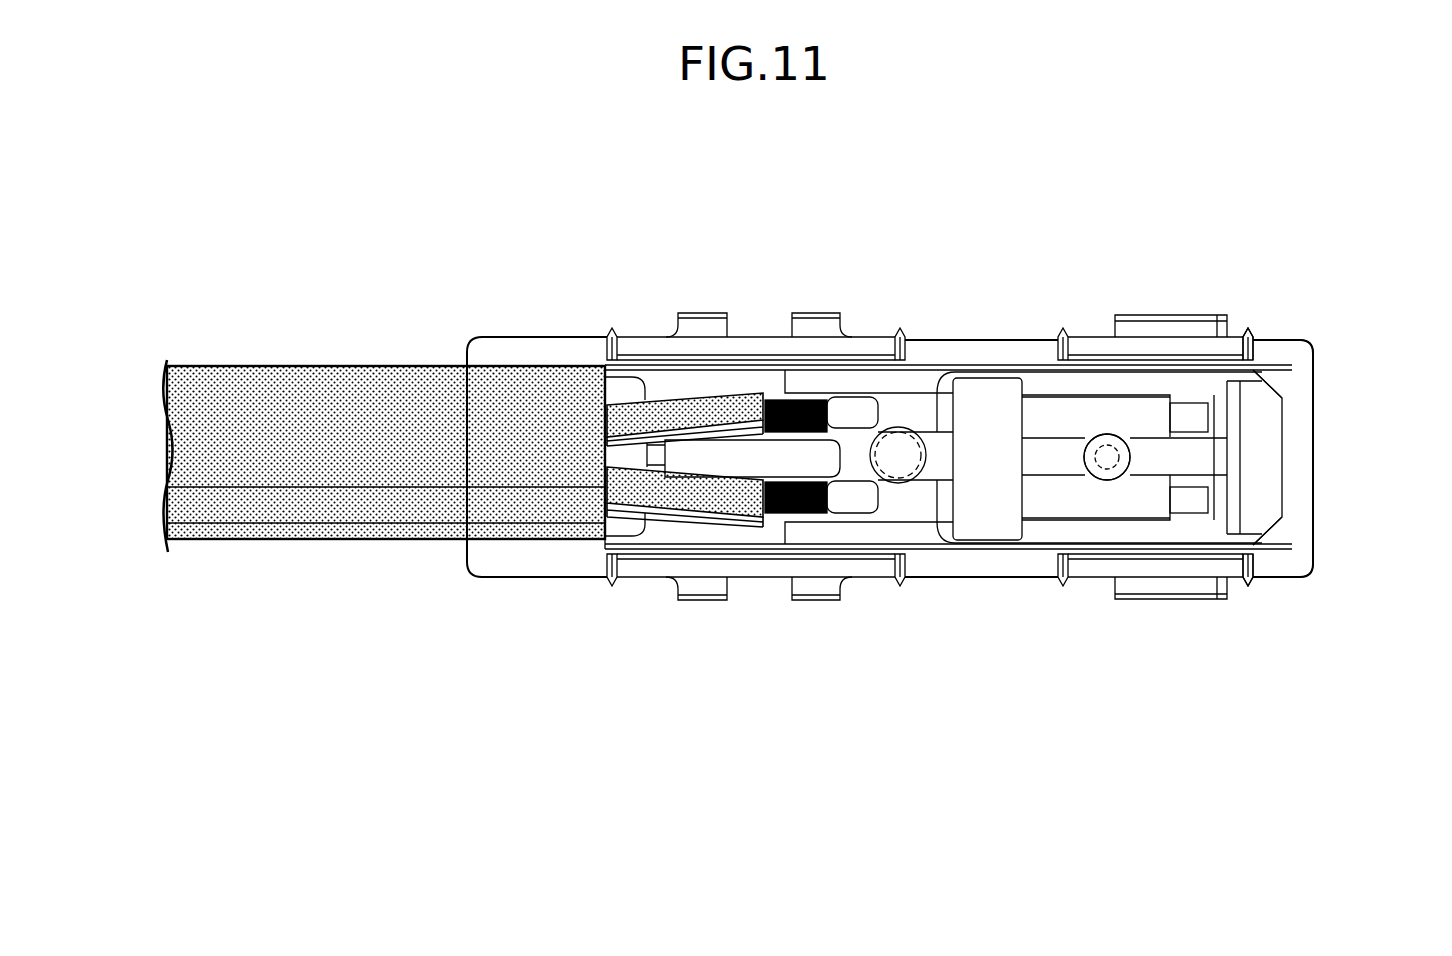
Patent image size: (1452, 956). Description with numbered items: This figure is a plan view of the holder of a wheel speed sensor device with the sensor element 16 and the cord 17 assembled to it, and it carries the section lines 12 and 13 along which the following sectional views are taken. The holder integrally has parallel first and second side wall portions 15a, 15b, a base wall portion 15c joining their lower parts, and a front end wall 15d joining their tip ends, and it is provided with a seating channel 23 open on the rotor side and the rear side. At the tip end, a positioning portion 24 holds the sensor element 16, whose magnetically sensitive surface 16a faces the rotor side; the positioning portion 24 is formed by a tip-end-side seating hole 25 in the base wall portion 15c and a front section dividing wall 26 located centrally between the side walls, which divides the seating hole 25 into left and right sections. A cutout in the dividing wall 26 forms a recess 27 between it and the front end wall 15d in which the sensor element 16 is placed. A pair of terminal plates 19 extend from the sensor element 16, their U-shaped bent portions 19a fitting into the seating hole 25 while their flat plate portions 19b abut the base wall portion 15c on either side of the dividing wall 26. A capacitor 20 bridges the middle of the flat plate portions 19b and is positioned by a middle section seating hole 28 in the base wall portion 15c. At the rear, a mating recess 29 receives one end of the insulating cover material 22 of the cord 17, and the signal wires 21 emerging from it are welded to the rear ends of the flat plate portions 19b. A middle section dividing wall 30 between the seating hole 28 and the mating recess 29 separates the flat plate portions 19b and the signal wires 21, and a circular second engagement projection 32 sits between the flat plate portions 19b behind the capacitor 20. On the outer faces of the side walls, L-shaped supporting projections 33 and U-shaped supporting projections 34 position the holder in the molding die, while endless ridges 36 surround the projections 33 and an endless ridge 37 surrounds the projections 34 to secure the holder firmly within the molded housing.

The section line 12— 12 is at (131, 455).
The section line 13— 13 is at (152, 500).
The first side wall portion 15a is at (870, 342).
The second side wall portion 15b is at (937, 562).
The base wall portion 15c is at (818, 380).
The front end wall 15d is at (1298, 378).
The sensor element 16 is at (1289, 421).
The magnetically sensitive surface 16a is at (1273, 445).
The cord 17 is at (358, 358).
The terminal plates 19 is at (1100, 381).
The bent portions 19a is at (1225, 380).
The flat plate portions 19b is at (1053, 413).
The capacitor 20 is at (985, 545).
The signal wires 21 is at (683, 395).
The insulating cover material 22 is at (362, 515).
The seating channel 23 is at (838, 542).
The positioning portion 24 is at (1253, 579).
The tip-end-side seating hole 25 is at (1160, 525).
The front section dividing wall 26 is at (1163, 395).
The recess 27 is at (1243, 467).
The middle section seating hole 28 is at (977, 380).
The mating recess 29 is at (545, 374).
The middle section dividing wall 30 is at (750, 462).
The second engagement projection 32 is at (902, 485).
The supporting projections 33 is at (1204, 316).
The supporting projections 34 is at (699, 602).
The endless ridges 36 is at (1256, 360).
The endless ridge 37 is at (712, 313).